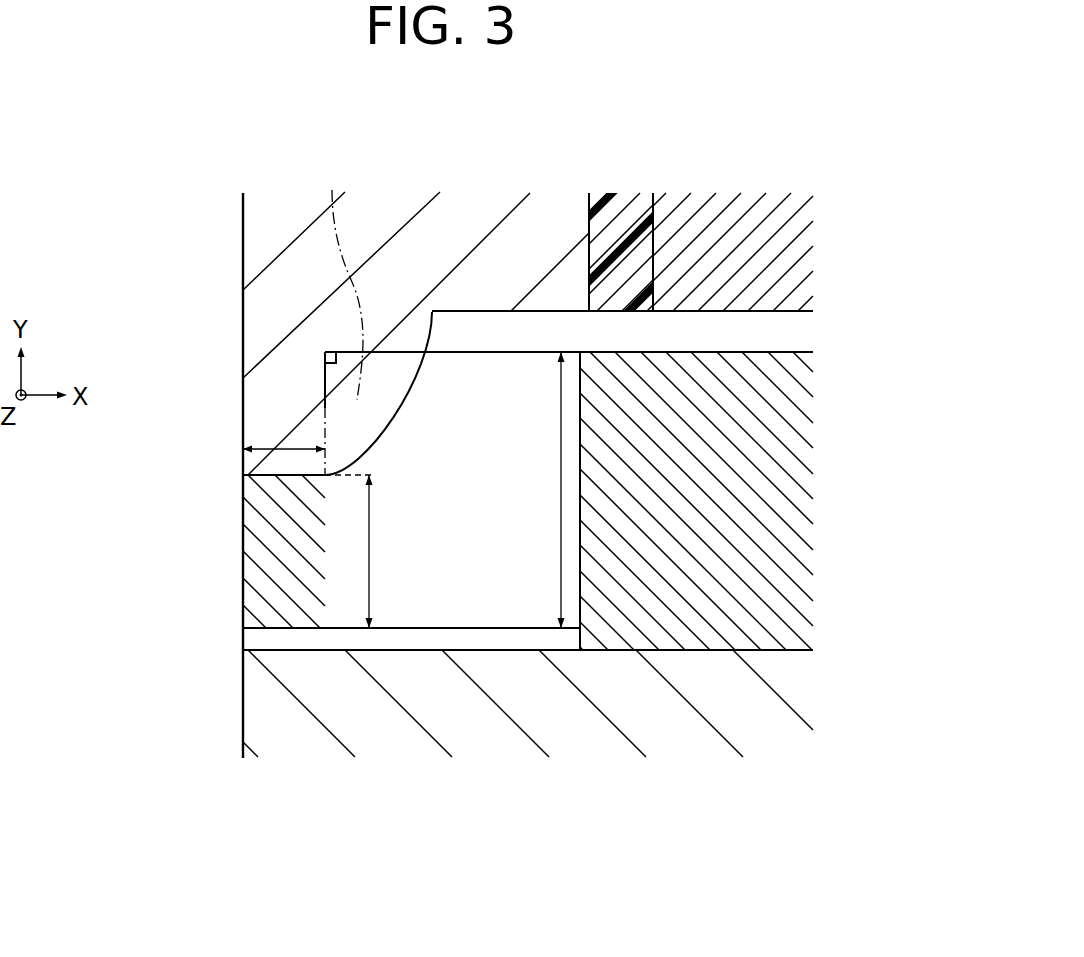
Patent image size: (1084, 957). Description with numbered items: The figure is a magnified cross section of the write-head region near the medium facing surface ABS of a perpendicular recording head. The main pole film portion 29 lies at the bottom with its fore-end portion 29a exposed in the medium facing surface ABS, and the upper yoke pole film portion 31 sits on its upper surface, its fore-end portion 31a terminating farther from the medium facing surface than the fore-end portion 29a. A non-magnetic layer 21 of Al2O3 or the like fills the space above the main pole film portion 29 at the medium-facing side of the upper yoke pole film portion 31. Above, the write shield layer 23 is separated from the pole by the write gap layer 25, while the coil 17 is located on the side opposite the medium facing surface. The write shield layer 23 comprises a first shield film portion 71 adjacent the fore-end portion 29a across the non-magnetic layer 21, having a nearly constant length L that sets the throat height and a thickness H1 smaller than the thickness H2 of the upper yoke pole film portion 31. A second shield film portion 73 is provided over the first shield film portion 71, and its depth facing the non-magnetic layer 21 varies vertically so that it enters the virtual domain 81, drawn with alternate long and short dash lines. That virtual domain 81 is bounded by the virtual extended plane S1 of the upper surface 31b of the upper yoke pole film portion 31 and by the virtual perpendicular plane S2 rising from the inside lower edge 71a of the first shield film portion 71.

The coil 17 is at (673, 185).
The non-magnetic layer 21 is at (500, 385).
The write shield layer 23 is at (236, 315).
The write gap layer 25 is at (252, 643).
The main pole film portion 29 is at (480, 713).
The fore-end portion of the main pole film portion 29a is at (243, 703).
The upper yoke pole film portion 31 is at (792, 410).
The fore-end portion of the upper yoke pole film portion 31a is at (580, 533).
The upper surface of the upper yoke pole film portion 31b is at (767, 352).
The first shield film portion 71 is at (253, 555).
The lower edge of the first shield film portion 71a is at (330, 629).
The second shield film portion 73 is at (263, 391).
The virtual domain 81 is at (331, 192).
The medium facing surface ABS is at (243, 216).
The length of the first shield film portion L is at (260, 427).
The thickness of the first shield film portion H1 is at (387, 551).
The thickness of the upper yoke pole film portion H2 is at (561, 455).
The virtual extended plane S1 is at (375, 352).
The virtual perpendicular plane S2 is at (325, 408).